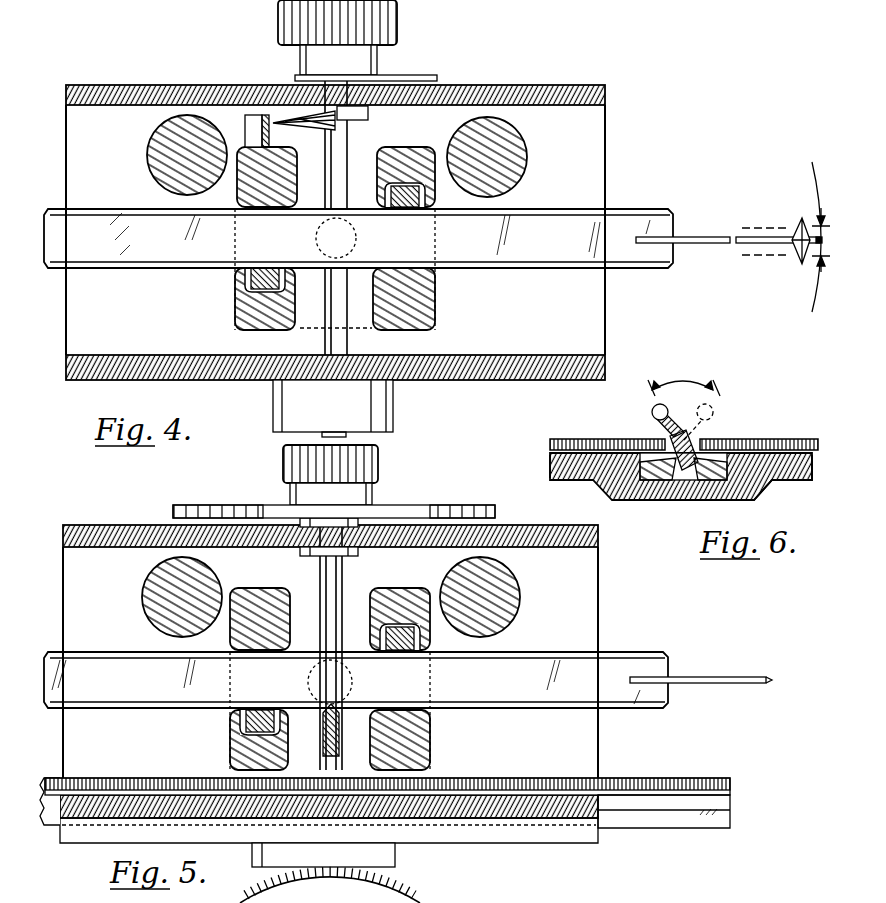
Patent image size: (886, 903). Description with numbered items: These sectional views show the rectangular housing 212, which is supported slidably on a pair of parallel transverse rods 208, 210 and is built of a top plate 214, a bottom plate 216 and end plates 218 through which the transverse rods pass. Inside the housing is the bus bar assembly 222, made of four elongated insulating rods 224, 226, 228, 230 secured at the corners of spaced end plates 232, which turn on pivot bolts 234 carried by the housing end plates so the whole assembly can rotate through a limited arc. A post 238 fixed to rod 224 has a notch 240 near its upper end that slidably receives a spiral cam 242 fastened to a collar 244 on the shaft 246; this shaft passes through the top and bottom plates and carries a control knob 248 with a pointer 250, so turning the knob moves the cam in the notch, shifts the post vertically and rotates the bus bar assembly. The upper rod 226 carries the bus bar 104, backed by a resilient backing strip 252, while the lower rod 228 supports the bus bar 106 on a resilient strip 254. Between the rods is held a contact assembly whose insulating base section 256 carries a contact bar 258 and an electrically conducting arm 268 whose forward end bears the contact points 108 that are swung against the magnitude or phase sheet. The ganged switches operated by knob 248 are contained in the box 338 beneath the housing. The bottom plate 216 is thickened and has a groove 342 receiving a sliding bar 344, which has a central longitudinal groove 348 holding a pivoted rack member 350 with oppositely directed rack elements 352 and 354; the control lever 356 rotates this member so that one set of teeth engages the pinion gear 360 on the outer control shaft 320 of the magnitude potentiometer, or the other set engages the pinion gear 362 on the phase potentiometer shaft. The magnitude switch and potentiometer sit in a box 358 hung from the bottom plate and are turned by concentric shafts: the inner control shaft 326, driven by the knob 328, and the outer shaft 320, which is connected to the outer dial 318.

In FIG. 4, the bus bar 104 is at (416, 208).
In FIG. 5, the bus bar 104 is at (414, 650).
In FIG. 4, the bus bar 106 is at (252, 268).
In FIG. 5, the bus bar 106 is at (246, 710).
In FIG. 4, the electrical contact points 108 is at (796, 230).
In FIG. 4, the transverse rod 208 is at (526, 160).
In FIG. 5, the transverse rod 208 is at (520, 582).
In FIG. 4, the transverse rod 210 is at (148, 166).
In FIG. 5, the transverse rod 210 is at (142, 598).
In FIG. 4, the rectangular housing 212 is at (386, 225).
In FIG. 5, the rectangular housing 212 is at (353, 672).
In FIG. 4, the top plate 214 is at (96, 84).
In FIG. 5, the top plate 214 is at (136, 524).
In FIG. 4, the bottom plate 216 is at (166, 380).
In FIG. 5, the bottom plate 216 is at (90, 820).
In FIG. 6, the bottom plate 216 is at (552, 464).
In FIG. 4, the end plate 218 is at (602, 132).
In FIG. 5, the end plate 218 is at (600, 610).
In FIG. 4, the bus bar assembly 222 is at (310, 236).
In FIG. 5, the bus bar assembly 222 is at (306, 667).
In FIG. 4, the elongated rod 224 is at (240, 200).
In FIG. 5, the elongated rod 224 is at (268, 574).
In FIG. 4, the elongated rod 226 is at (409, 189).
In FIG. 5, the elongated rod 226 is at (421, 625).
In FIG. 4, the elongated rod 228 is at (237, 282).
In FIG. 5, the elongated rod 228 is at (215, 721).
In FIG. 4, the elongated rod 230 is at (426, 313).
In FIG. 5, the elongated rod 230 is at (422, 758).
In FIG. 4, the end plate 232 is at (360, 328).
In FIG. 5, the bolt 234 is at (310, 694).
In FIG. 4, the post 238 is at (250, 128).
In FIG. 4, the notch 240 is at (266, 128).
In FIG. 4, the spiral cam 242 is at (290, 118).
In FIG. 4, the collar 244 is at (370, 118).
In FIG. 4, the shaft 246 is at (348, 140).
In FIG. 4, the control knob 248 is at (398, 26).
In FIG. 4, the pointer 250 is at (412, 78).
In FIG. 4, the resilient backing strip 252 is at (401, 208).
In FIG. 5, the resilient backing strip 252 is at (398, 650).
In FIG. 4, the resilient strip 254 is at (272, 280).
In FIG. 5, the resilient strip 254 is at (236, 713).
In FIG. 4, the base section 256 is at (371, 244).
In FIG. 5, the base section 256 is at (367, 673).
In FIG. 4, the contact bar 258 is at (636, 210).
In FIG. 5, the contact bar 258 is at (626, 652).
In FIG. 4, the electrically conducting arm 268 is at (700, 236).
In FIG. 5, the electrically conducting arm 268 is at (736, 676).
In FIG. 5, the outer dial 318 is at (446, 506).
In FIG. 5, the outer control shaft 320 is at (324, 637).
In FIG. 5, the inner control shaft 326 is at (334, 742).
In FIG. 5, the knob 328 is at (378, 478).
In FIG. 4, the box 338 is at (393, 405).
In FIG. 6, the groove 342 is at (672, 500).
In FIG. 5, the bar 344 is at (716, 828).
In FIG. 6, the bar 344 is at (718, 500).
In FIG. 6, the central longitudinal groove 348 is at (648, 488).
In FIG. 6, the rack member 350 is at (700, 452).
In FIG. 5, the rack element 352 is at (674, 786).
In FIG. 6, the rack element 352 is at (648, 440).
In FIG. 6, the rack element 354 is at (692, 432).
In FIG. 6, the control lever 356 is at (654, 404).
In FIG. 5, the box 358 is at (396, 862).
In FIG. 5, the pinion gear 360 is at (540, 785).
In FIG. 6, the pinion gear 360 is at (653, 471).
In FIG. 6, the pinion gear 362 is at (796, 438).